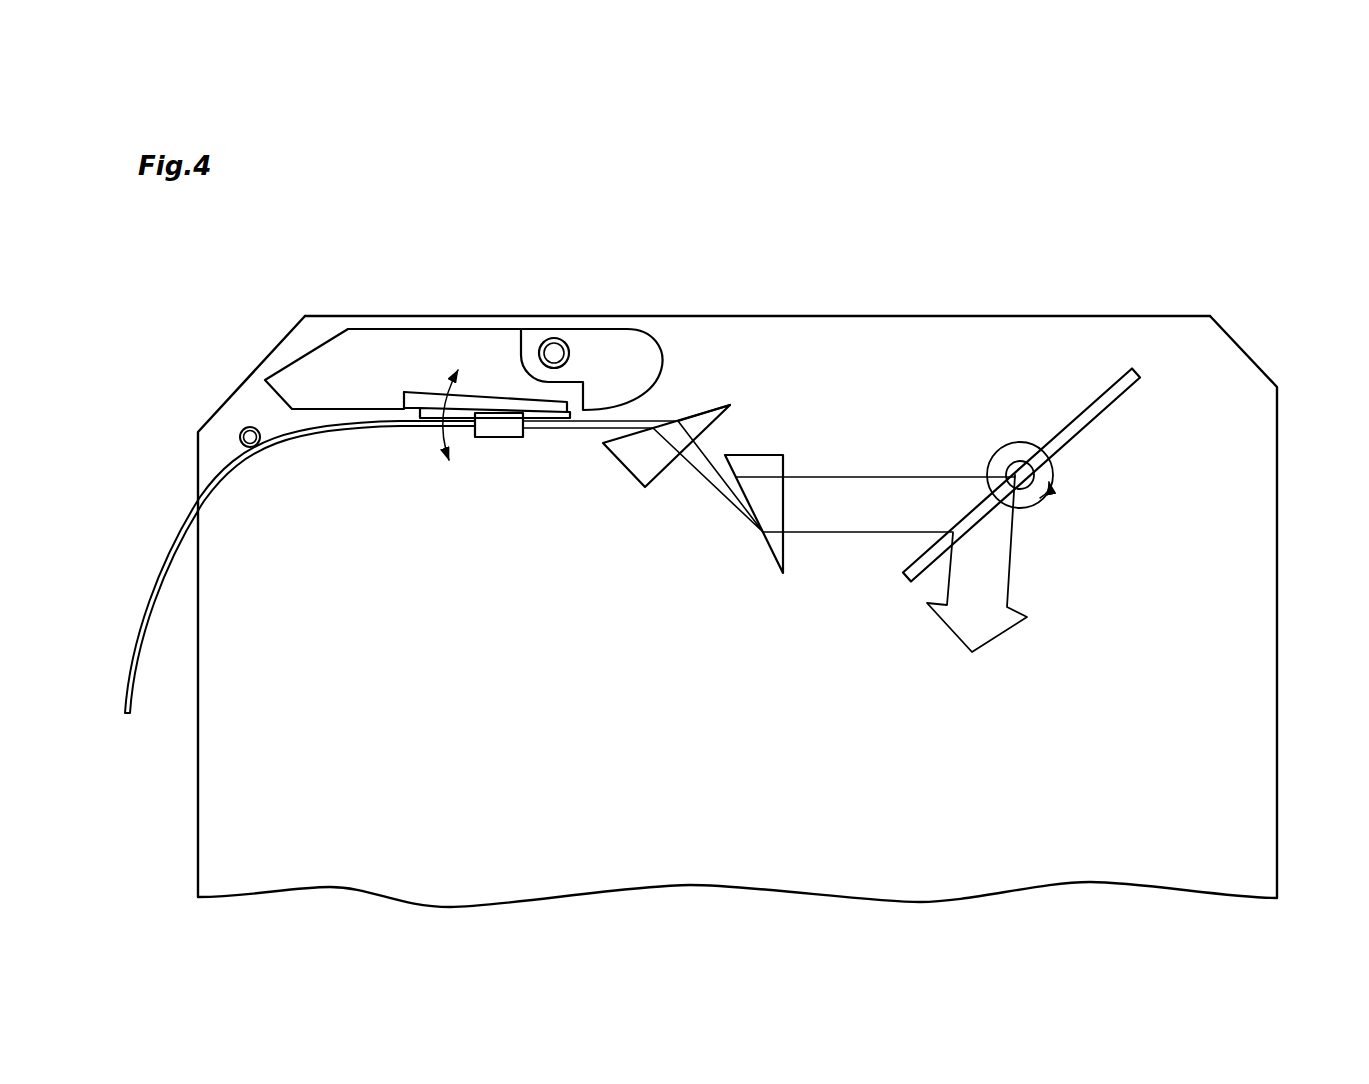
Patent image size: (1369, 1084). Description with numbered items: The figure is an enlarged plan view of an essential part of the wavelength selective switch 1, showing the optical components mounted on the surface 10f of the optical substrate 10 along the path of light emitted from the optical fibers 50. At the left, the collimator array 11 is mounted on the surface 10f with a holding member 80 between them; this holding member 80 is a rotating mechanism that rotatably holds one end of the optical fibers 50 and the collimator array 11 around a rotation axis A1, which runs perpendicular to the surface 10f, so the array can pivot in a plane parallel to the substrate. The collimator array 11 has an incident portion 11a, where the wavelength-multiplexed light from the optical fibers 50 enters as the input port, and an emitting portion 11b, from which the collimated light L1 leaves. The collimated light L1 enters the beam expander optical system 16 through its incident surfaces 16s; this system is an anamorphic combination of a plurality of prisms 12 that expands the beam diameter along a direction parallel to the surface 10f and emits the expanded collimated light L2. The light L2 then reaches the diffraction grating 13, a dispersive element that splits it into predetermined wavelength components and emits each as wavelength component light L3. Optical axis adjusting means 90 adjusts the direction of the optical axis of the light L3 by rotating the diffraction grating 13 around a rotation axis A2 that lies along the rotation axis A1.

The wavelength selective switch 1 is at (1275, 216).
The optical substrate 10 is at (1117, 316).
The surface of the optical substrate 10f is at (885, 345).
The holding member 80 is at (428, 355).
The rotation axis A1 is at (550, 348).
The collimator array 11 is at (497, 440).
The incident portion 11a is at (467, 432).
The emitting portion 11b is at (530, 440).
The optical fibers 50 is at (145, 577).
The collimated light L1 is at (572, 420).
The beam expander optical system 16 is at (735, 578).
The prisms 12 is at (631, 478).
The incident surfaces 16s is at (702, 402).
The collimated light L2 is at (903, 475).
The optical axis adjusting means 90 is at (1078, 493).
The diffraction grating 13 is at (1072, 420).
The rotation axis A2 is at (1040, 470).
The wavelength component light L3 is at (1013, 562).